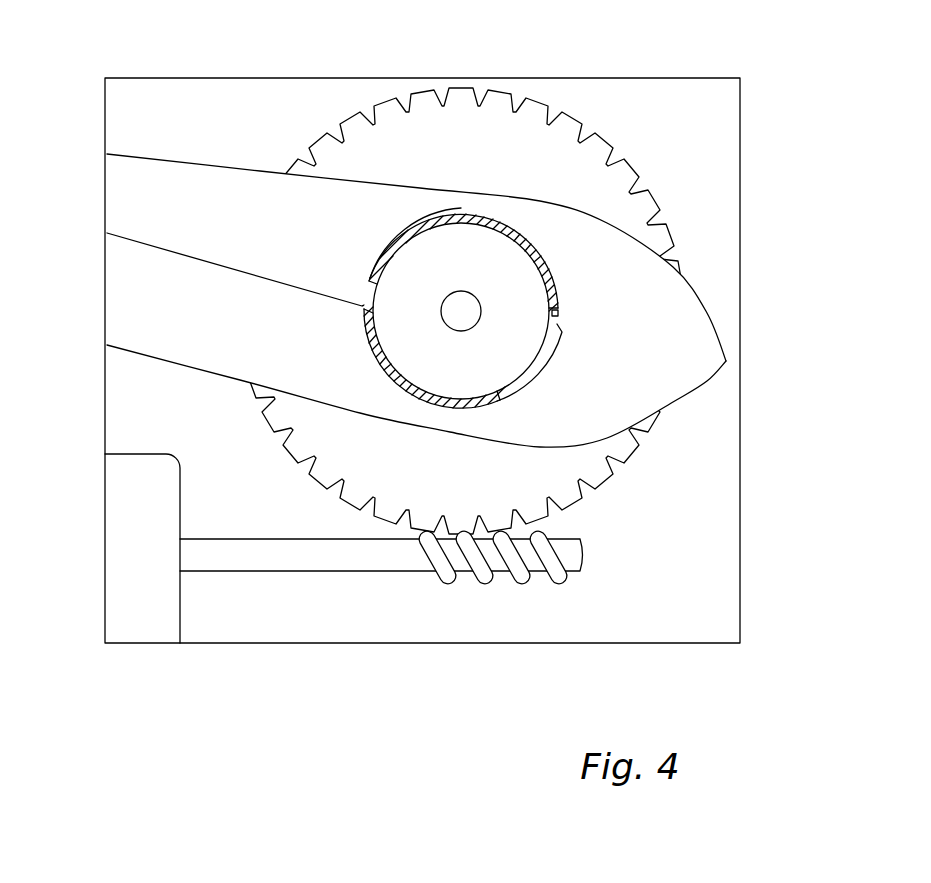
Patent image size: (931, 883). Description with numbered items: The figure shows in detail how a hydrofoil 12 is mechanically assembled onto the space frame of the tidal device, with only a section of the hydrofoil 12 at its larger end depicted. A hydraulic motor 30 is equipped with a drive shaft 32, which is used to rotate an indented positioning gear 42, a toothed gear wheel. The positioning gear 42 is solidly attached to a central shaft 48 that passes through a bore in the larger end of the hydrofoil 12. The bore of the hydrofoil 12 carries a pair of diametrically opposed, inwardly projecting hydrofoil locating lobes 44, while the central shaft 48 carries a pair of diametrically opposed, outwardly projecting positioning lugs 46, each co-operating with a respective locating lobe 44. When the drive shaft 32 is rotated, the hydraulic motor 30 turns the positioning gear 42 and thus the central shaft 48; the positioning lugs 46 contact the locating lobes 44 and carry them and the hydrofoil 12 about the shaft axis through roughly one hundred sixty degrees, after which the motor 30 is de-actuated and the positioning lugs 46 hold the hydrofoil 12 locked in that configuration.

The hydrofoil 12 is at (192, 160).
The hydraulic motor 30 is at (153, 476).
The drive shaft 32 is at (353, 571).
The positioning gear 42 is at (582, 462).
The hydrofoil locating lobes 44 is at (557, 330).
The positioning lugs 46 is at (107, 233).
The central shaft 48 is at (515, 284).